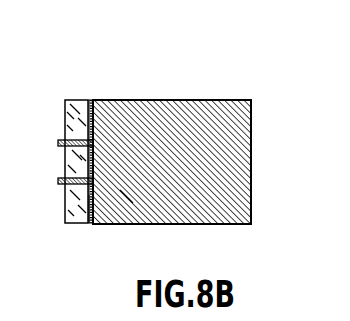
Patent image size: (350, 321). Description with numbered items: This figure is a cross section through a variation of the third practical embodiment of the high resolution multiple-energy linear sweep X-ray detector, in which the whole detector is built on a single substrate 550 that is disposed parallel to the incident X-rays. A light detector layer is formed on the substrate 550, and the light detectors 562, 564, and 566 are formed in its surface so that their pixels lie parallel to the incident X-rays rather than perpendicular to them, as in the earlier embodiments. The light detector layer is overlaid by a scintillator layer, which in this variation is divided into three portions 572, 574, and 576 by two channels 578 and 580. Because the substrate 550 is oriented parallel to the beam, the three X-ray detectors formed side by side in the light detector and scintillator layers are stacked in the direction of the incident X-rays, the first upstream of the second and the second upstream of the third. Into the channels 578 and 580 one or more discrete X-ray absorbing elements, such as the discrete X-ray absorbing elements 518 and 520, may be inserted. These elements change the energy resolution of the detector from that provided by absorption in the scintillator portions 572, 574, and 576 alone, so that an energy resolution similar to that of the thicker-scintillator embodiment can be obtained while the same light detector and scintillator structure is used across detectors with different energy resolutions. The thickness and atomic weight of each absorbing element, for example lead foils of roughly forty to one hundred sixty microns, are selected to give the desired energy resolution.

The substrate 550 is at (142, 100).
The portion of the scintillator layer 572 is at (65, 108).
The light detector 562 is at (92, 140).
The discrete X-ray absorbing element 518 is at (58, 142).
The discrete X-ray absorbing element 520 is at (58, 181).
The portion of the scintillator layer 574 is at (65, 164).
The channel 578 is at (66, 120).
The channel 580 is at (67, 186).
The portion of the scintillator layer 576 is at (78, 200).
The light detector 566 is at (88, 198).
The light detector 564 is at (129, 198).